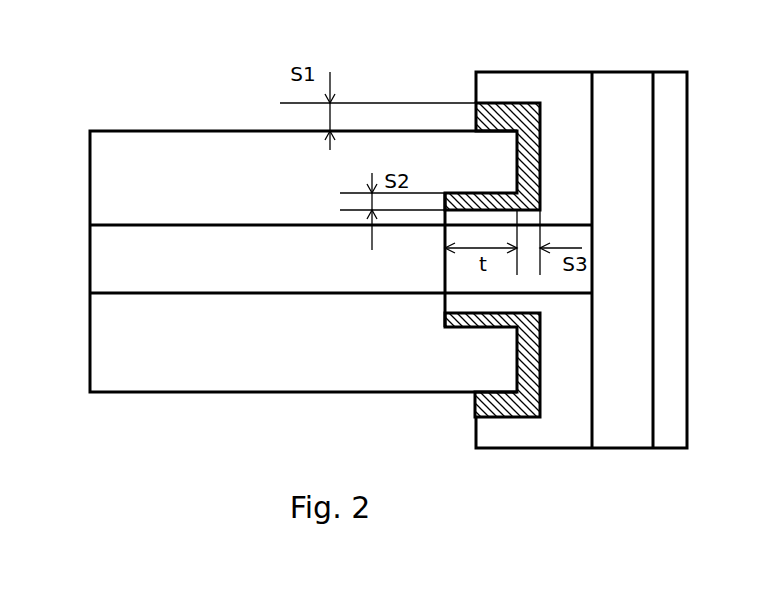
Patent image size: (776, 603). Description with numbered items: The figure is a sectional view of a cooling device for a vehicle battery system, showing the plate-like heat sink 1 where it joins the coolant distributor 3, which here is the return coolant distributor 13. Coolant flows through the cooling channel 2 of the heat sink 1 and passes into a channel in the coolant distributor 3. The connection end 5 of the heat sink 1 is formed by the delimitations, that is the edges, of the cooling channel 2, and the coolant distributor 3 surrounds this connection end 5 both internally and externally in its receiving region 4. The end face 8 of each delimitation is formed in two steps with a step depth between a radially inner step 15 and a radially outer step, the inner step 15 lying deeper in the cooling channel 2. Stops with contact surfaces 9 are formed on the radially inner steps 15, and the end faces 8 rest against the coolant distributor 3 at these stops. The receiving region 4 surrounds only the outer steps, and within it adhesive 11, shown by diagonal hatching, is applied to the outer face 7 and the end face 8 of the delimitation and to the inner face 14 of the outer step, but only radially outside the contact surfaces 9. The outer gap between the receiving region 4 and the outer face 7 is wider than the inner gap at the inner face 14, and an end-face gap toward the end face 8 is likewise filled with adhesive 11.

The heat sink 1 is at (133, 358).
The cooling channel 2 is at (243, 262).
The coolant distributor 3 is at (675, 300).
The receiving region 4 is at (473, 408).
The connection end 5 is at (425, 362).
The outer face of the delimitation of the cooling channel 7 is at (507, 393).
The end face of the delimitation of the cooling channel 8 is at (520, 355).
The contact surface 9 is at (443, 222).
The adhesive 11 is at (532, 128).
The return coolant distributor 13 is at (620, 125).
The inner face of the outer step 14 is at (488, 330).
The radially inner step of end face of the delimitation of the cooling channel 15 is at (444, 306).